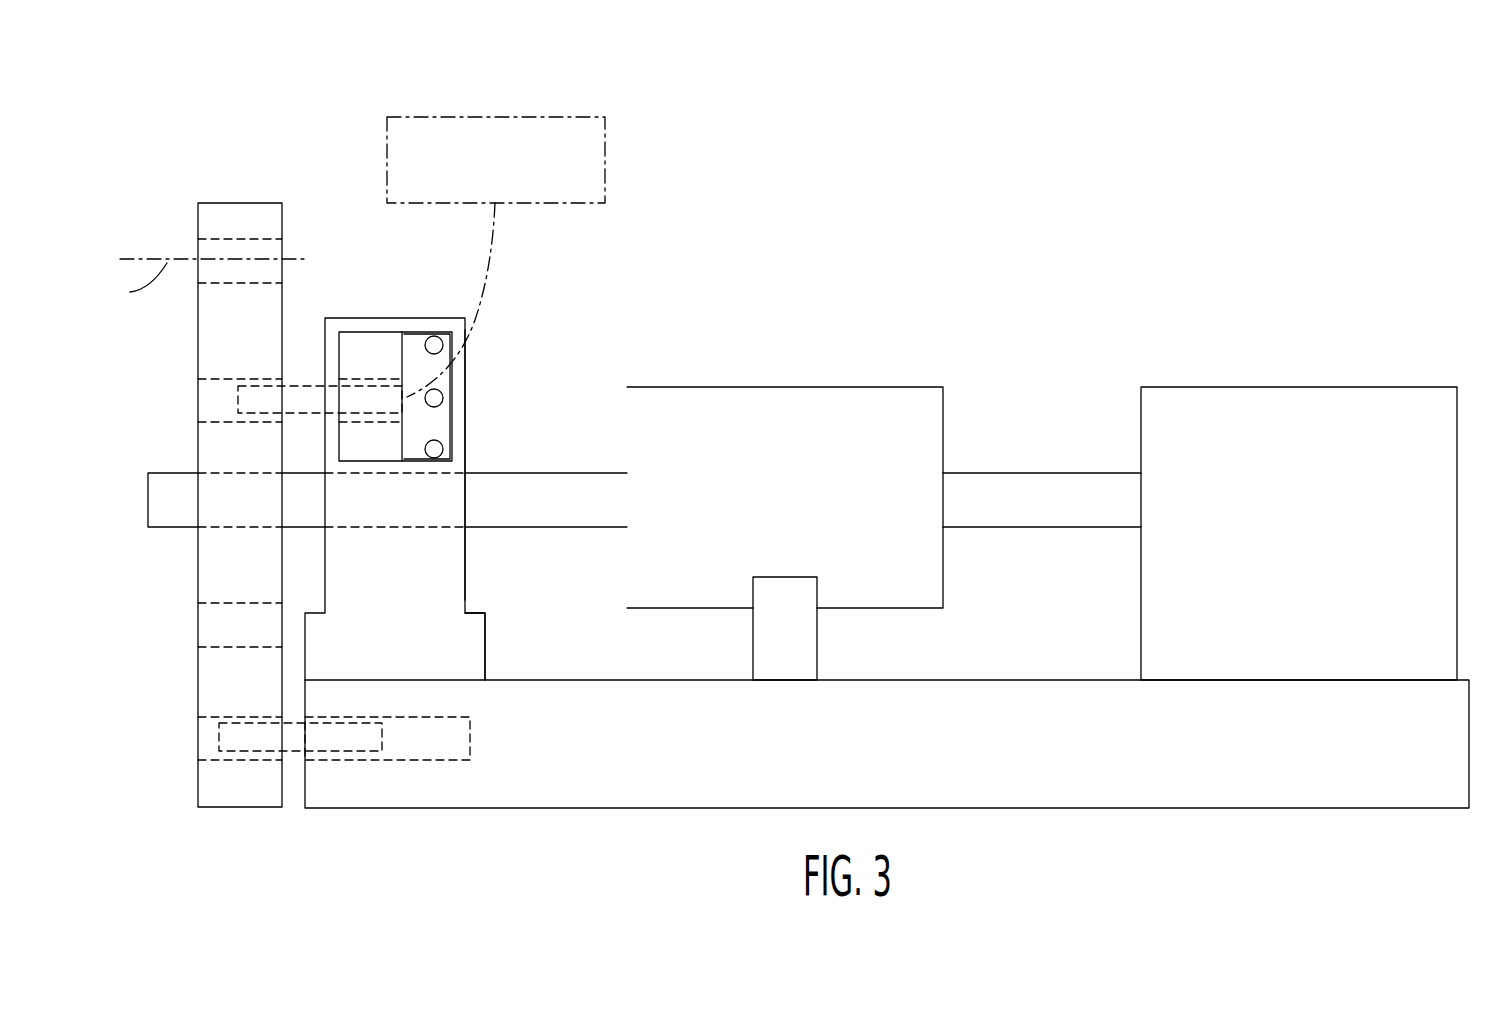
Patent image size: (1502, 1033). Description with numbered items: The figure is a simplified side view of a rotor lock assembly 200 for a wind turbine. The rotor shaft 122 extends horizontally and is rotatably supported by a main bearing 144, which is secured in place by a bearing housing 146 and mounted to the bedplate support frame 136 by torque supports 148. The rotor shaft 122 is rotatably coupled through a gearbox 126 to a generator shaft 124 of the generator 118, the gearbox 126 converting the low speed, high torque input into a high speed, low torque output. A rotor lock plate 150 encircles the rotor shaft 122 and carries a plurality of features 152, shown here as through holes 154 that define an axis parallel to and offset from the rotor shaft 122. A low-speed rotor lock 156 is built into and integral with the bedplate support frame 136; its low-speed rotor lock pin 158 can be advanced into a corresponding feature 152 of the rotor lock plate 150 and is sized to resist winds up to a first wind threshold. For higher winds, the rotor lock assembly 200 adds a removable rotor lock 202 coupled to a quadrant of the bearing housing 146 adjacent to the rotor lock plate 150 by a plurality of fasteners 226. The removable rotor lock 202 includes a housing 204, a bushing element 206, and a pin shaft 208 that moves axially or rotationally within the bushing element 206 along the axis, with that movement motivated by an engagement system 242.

The rotor lock assembly 200 is at (300, 88).
The engagement system 242 is at (588, 132).
The rotor lock plate 150 is at (218, 213).
The features 152 is at (214, 240).
The through holes 154 is at (203, 393).
The main bearing 144 is at (340, 302).
The bearing housing 146 is at (457, 422).
The torque supports 148 is at (470, 630).
The removable rotor lock 202 is at (357, 348).
The housing 204 is at (392, 355).
The bushing element 206 is at (358, 383).
The pin shaft 208 is at (293, 398).
The fasteners 226 is at (434, 398).
The rotor shaft 122 is at (510, 487).
The generator shaft 124 is at (1025, 487).
The gearbox 126 is at (862, 405).
The generator 118 is at (1231, 402).
The bedplate support frame 136 is at (492, 790).
The low-speed rotor lock 156 is at (424, 780).
The low-speed rotor lock pin 158 is at (297, 742).